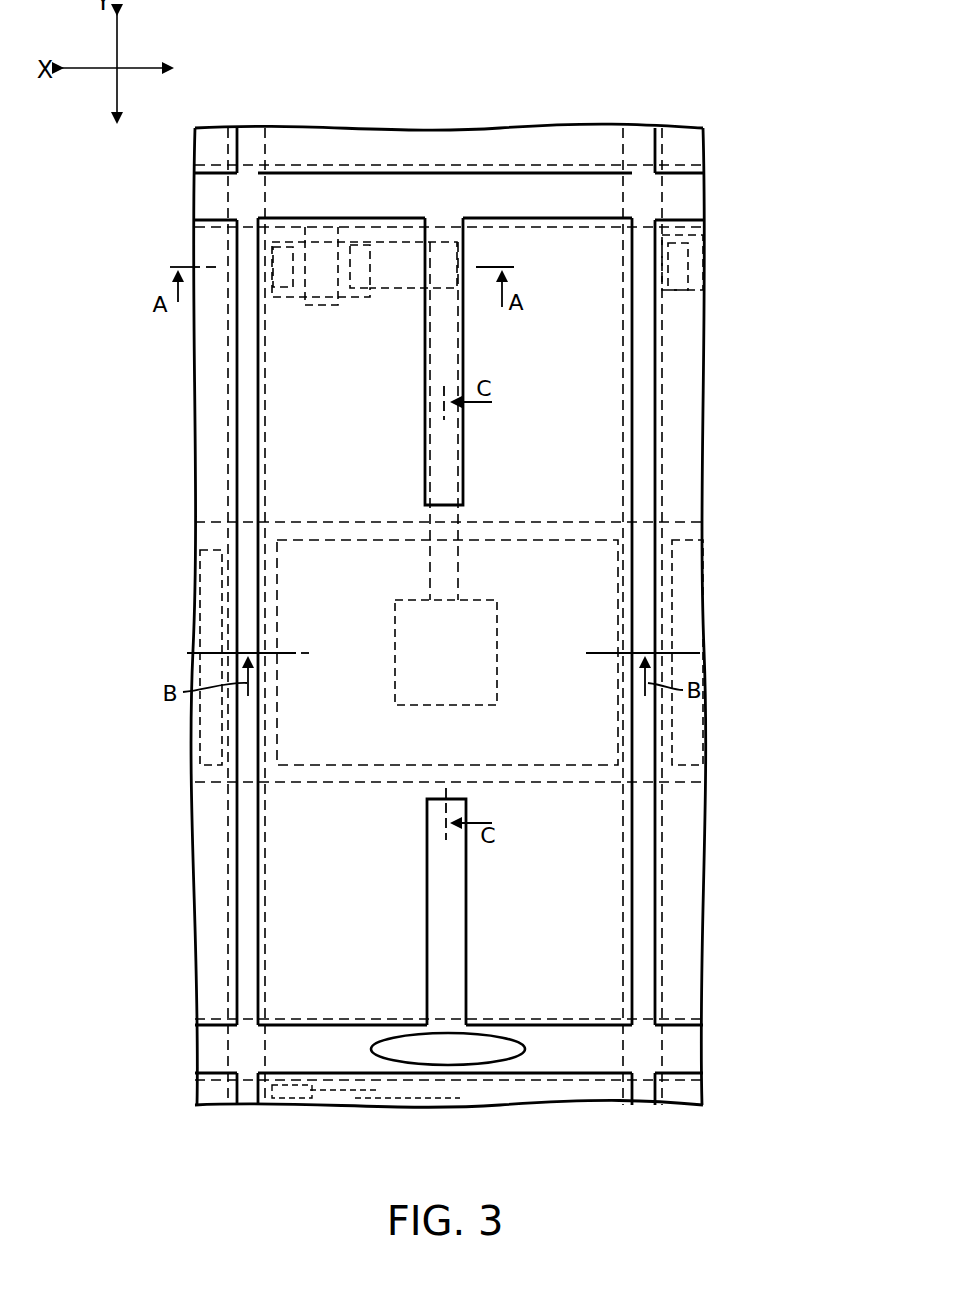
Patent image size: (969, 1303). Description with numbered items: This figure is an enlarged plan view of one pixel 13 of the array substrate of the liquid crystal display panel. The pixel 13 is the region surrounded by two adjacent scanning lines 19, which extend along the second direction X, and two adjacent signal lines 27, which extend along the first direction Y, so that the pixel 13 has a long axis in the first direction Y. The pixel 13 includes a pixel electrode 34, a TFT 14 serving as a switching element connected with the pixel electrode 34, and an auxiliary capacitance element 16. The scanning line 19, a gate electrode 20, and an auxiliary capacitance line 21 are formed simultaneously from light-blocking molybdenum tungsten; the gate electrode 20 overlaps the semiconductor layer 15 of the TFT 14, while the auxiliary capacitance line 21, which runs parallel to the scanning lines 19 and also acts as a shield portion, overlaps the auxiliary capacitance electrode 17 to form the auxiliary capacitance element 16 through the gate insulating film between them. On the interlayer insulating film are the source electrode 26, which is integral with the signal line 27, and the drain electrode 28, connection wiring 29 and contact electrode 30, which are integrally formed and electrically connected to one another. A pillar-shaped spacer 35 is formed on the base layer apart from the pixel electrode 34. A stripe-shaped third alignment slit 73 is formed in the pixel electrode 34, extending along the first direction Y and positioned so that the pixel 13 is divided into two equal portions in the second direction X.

The pixel 13 is at (528, 203).
The TFT 14 is at (384, 314).
The semiconductor layer 15 is at (352, 298).
The auxiliary capacitance element 16 is at (128, 487).
The auxiliary capacitance electrode 17 is at (262, 560).
The scanning line 19 is at (356, 162).
The gate electrode 20 is at (320, 306).
The auxiliary capacitance line 21 is at (294, 520).
The source electrode 26 is at (300, 298).
The signal line 27 is at (228, 378).
The drain electrode 28 is at (445, 262).
The connection wiring 29 is at (463, 338).
The contact electrode 30 is at (493, 600).
The pixel electrode 34 is at (632, 477).
The pillar-shaped spacer 35 is at (515, 1050).
The third alignment slit 73 is at (428, 470).